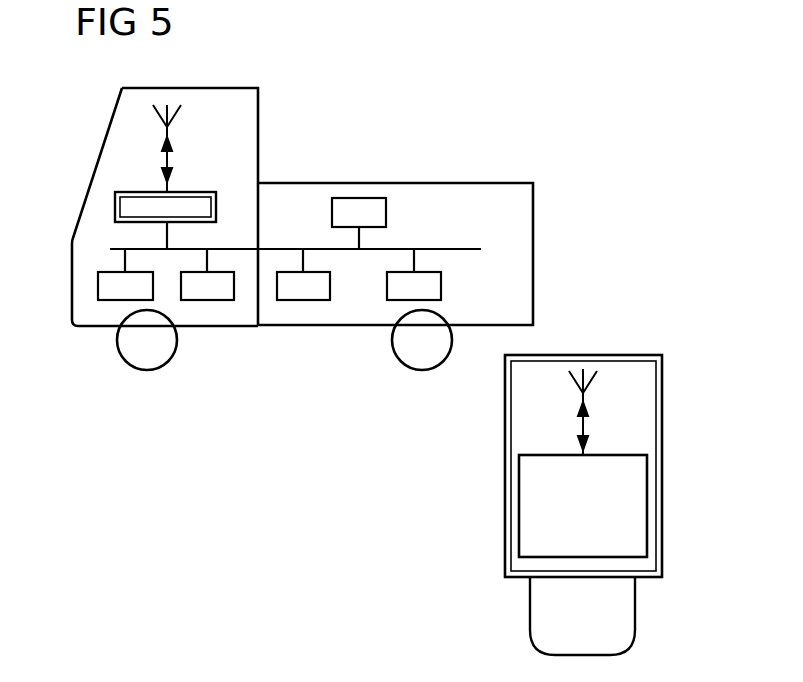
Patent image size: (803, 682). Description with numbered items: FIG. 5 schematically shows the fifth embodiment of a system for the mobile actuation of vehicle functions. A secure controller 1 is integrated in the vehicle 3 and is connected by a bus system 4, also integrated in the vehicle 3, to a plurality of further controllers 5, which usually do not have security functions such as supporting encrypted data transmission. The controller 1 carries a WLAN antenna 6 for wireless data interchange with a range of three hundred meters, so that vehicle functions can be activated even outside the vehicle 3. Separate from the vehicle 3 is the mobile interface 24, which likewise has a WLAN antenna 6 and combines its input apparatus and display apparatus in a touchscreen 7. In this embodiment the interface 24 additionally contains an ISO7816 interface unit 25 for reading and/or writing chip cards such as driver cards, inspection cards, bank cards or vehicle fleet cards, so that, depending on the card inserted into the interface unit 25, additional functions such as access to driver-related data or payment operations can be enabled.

The secure controller 1 is at (190, 191).
The vehicle 3 is at (292, 346).
The bus system 4 is at (450, 247).
The further controllers 5 is at (330, 285).
The WLAN antenna 6 is at (156, 119).
The touchscreen 7 is at (614, 453).
The interface 24 is at (504, 467).
The ISO7816 interface unit 25 is at (625, 614).